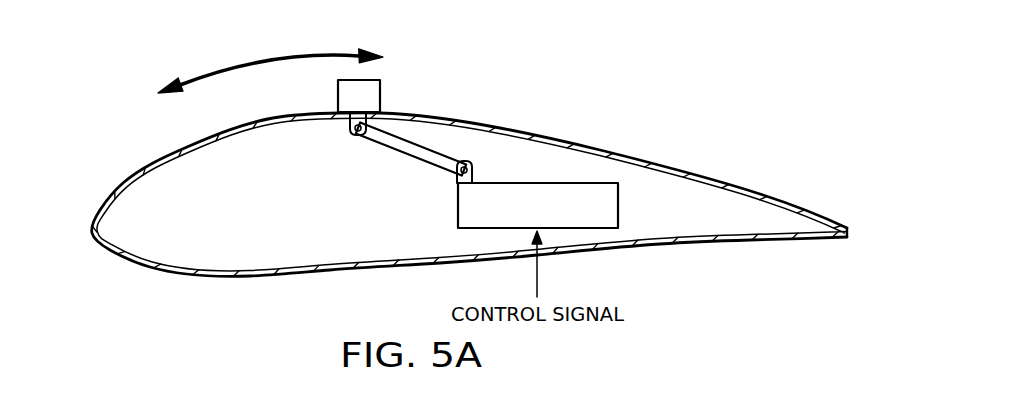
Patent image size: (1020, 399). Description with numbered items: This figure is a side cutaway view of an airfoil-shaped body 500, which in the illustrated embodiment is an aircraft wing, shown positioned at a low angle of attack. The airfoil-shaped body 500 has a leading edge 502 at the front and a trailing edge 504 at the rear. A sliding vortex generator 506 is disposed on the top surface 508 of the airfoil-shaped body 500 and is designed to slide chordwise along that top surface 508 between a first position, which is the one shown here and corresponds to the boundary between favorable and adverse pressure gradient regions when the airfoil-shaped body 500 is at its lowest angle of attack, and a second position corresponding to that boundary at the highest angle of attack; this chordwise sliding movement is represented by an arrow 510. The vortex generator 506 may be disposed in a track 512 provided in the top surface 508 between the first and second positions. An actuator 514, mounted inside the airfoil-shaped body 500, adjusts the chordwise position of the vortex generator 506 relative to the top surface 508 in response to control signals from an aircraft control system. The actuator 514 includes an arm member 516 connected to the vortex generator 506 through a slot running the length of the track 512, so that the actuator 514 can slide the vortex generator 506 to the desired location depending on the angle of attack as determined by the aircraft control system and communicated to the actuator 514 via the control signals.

The airfoil-shaped body 500 is at (469, 153).
The leading edge 502 is at (92, 230).
The trailing edge 504 is at (849, 233).
The sliding vortex generator 506 is at (381, 94).
The top surface 508 is at (617, 143).
The arrow 510 is at (264, 60).
The track 512 is at (275, 122).
The actuator 514 is at (456, 212).
The arm member 516 is at (390, 150).